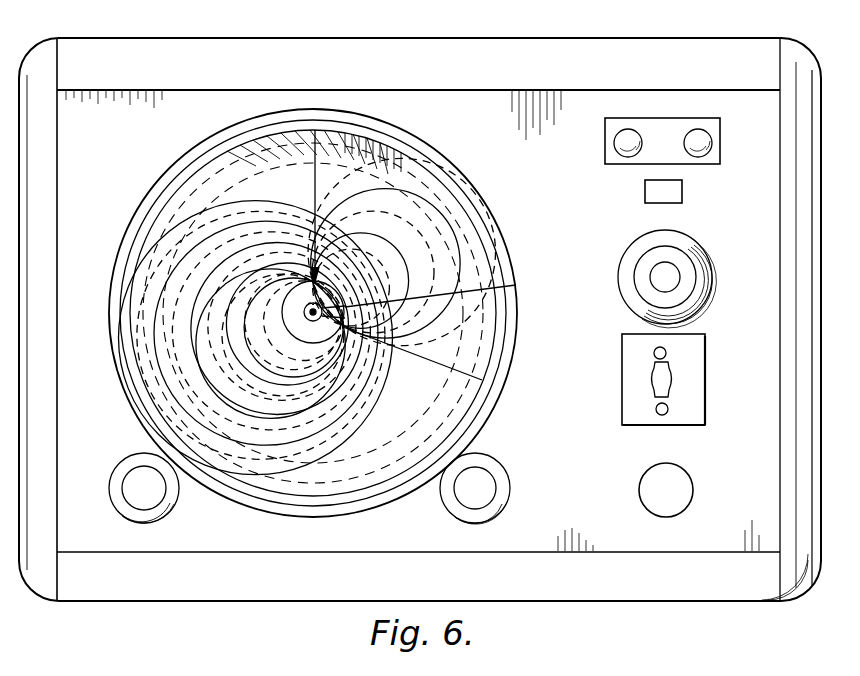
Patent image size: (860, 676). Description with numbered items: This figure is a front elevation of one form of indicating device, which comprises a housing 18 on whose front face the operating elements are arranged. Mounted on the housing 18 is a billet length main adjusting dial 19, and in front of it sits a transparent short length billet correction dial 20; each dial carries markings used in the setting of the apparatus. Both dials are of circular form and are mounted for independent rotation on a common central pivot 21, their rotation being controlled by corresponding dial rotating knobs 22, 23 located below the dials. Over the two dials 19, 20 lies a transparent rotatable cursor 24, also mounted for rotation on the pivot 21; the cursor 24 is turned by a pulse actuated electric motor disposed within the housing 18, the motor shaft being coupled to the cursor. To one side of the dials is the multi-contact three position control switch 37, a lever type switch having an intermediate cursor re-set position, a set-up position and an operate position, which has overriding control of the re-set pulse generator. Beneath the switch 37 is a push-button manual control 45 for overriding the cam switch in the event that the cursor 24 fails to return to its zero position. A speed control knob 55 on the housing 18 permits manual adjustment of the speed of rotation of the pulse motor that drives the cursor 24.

The housing 18 is at (665, 43).
The billet length main adjusting dial 19 is at (428, 170).
The short length billet correction dial 20 is at (457, 235).
The central pivot 21 is at (313, 321).
The dial rotating knob 22 is at (487, 492).
The dial rotating knob 23 is at (153, 490).
The transparent rotatable cursor 24 is at (490, 290).
The multi-contact three position control switch 37 is at (665, 380).
The push-button manual control 45 is at (665, 413).
The speed control knob 55 is at (655, 278).